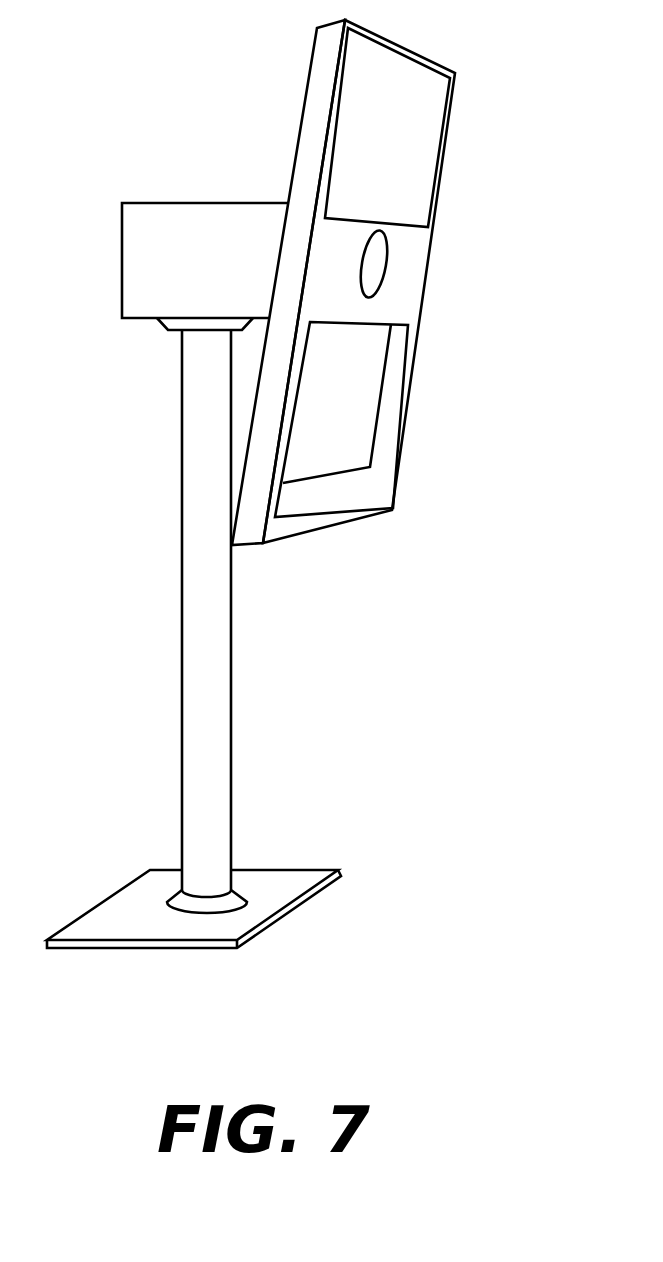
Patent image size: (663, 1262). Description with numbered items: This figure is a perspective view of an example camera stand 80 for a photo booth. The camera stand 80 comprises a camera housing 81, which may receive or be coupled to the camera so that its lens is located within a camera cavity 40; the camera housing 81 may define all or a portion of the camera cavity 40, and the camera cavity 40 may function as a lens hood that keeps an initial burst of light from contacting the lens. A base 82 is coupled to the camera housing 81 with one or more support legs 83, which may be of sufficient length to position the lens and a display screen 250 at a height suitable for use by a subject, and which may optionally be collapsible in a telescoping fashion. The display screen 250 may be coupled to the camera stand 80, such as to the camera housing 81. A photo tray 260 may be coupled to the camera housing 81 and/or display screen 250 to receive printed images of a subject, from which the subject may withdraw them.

The camera stand 80 is at (235, 202).
The camera housing 81 is at (152, 273).
The base 82 is at (135, 912).
The support legs 83 is at (210, 642).
The camera cavity 40 is at (375, 268).
The display screen 250 is at (418, 117).
The photo tray 260 is at (353, 425).